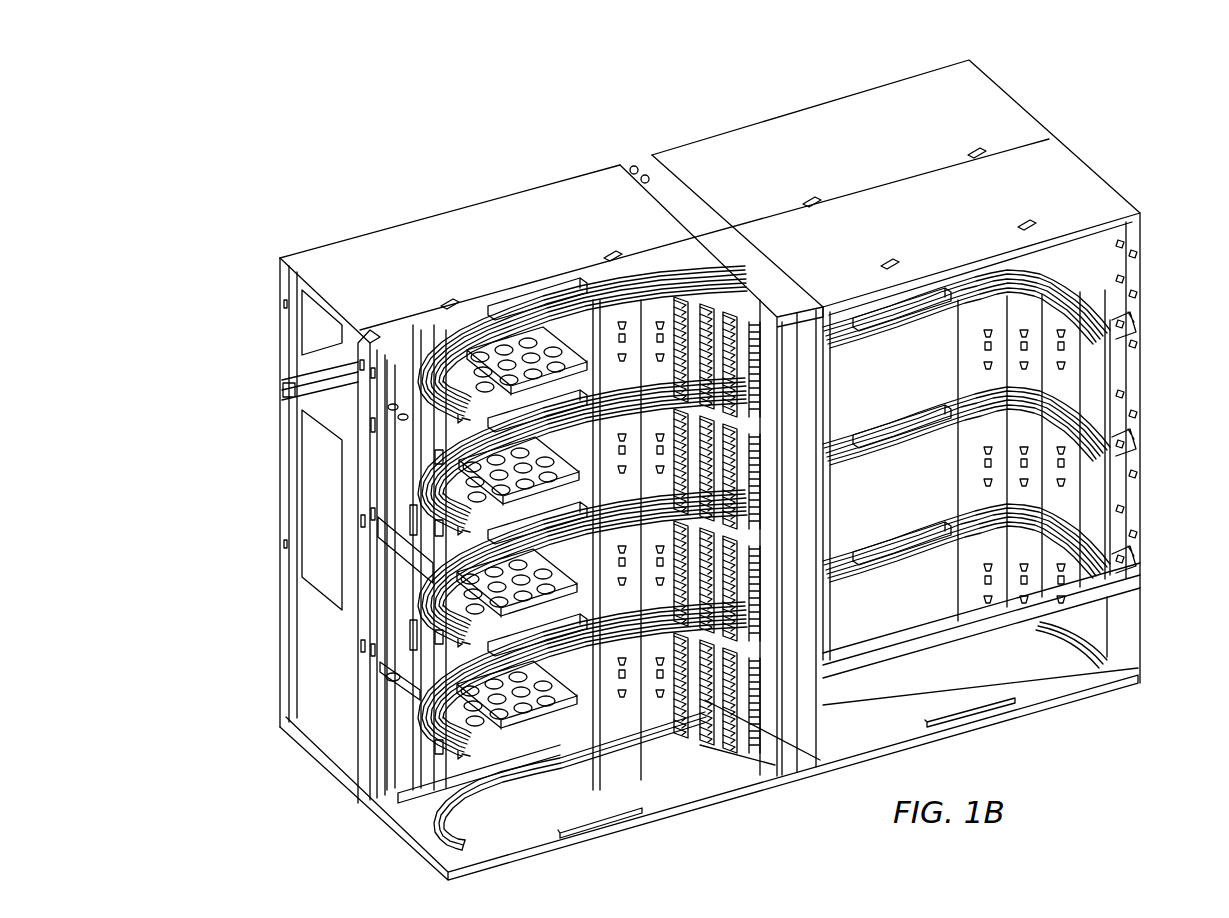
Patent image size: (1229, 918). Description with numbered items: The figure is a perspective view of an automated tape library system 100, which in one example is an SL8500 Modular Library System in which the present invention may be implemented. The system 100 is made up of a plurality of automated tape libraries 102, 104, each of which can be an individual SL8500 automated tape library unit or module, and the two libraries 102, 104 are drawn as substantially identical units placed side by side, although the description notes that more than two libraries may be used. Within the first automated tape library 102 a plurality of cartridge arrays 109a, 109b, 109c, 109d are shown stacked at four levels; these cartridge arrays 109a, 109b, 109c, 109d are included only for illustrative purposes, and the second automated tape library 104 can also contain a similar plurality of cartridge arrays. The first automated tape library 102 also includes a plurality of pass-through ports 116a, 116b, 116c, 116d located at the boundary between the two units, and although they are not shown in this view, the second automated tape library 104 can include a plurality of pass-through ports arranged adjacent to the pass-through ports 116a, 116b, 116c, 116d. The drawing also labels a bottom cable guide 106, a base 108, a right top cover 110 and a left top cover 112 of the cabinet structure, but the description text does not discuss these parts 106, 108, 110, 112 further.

The automated tape library system 100 is at (507, 128).
The automated tape library 102 is at (271, 497).
The automated tape library 104 is at (1150, 404).
The bottom cable guide 106 is at (705, 796).
The base 108 is at (1058, 686).
The right top cover 110 is at (1017, 111).
The left top cover 112 is at (427, 222).
The cartridge array 109a is at (676, 340).
The cartridge array 109b is at (674, 450).
The cartridge array 109c is at (674, 560).
The cartridge array 109d is at (674, 672).
The pass-through port 116a is at (718, 313).
The pass-through port 116b is at (722, 421).
The pass-through port 116c is at (722, 531).
The pass-through port 116d is at (722, 641).